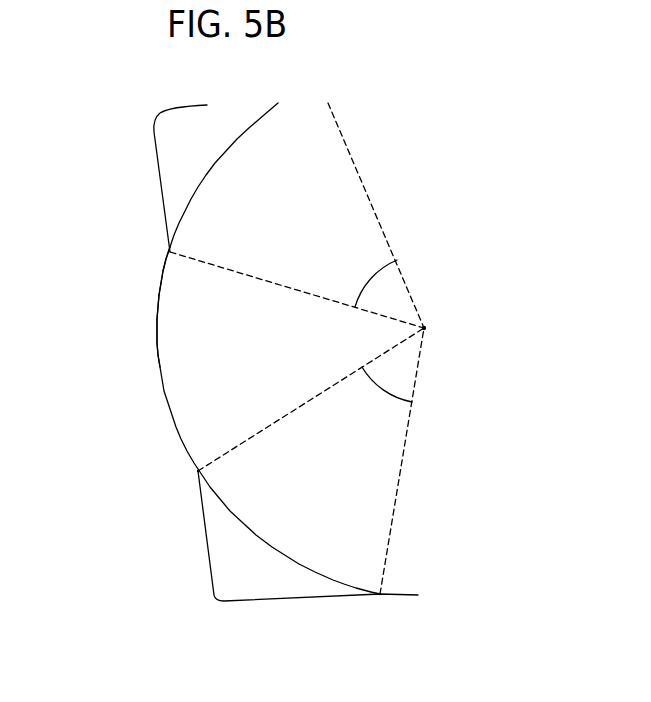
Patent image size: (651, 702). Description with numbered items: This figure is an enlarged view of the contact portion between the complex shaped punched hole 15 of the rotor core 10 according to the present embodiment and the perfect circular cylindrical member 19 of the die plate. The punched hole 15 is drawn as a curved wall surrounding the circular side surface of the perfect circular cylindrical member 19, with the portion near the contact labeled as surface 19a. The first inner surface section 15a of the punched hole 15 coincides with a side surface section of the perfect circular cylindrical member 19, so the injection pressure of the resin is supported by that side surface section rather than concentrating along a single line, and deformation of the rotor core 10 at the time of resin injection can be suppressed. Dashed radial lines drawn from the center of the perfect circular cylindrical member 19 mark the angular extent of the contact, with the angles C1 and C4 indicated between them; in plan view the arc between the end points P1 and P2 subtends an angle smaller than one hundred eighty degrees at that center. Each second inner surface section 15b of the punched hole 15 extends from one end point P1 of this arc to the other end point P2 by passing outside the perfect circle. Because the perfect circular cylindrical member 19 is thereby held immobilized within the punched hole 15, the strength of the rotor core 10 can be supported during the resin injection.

The rotor core 10 is at (105, 151).
The complex shaped punched hole 15 is at (169, 177).
The first inner surface section 15a is at (157, 338).
The second inner surface section 15b is at (210, 555).
The perfect circular cylindrical member 19 is at (200, 392).
The surface of second lens 19a is at (163, 268).
The end point of arc P1 is at (380, 594).
The other end point of arc P2 is at (198, 471).
The angle C1 is at (367, 280).
The angle C4 is at (387, 399).